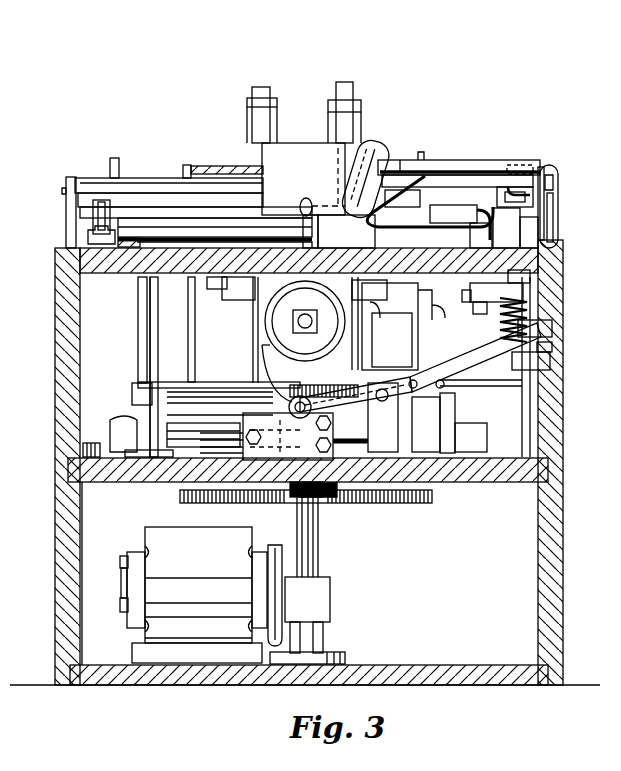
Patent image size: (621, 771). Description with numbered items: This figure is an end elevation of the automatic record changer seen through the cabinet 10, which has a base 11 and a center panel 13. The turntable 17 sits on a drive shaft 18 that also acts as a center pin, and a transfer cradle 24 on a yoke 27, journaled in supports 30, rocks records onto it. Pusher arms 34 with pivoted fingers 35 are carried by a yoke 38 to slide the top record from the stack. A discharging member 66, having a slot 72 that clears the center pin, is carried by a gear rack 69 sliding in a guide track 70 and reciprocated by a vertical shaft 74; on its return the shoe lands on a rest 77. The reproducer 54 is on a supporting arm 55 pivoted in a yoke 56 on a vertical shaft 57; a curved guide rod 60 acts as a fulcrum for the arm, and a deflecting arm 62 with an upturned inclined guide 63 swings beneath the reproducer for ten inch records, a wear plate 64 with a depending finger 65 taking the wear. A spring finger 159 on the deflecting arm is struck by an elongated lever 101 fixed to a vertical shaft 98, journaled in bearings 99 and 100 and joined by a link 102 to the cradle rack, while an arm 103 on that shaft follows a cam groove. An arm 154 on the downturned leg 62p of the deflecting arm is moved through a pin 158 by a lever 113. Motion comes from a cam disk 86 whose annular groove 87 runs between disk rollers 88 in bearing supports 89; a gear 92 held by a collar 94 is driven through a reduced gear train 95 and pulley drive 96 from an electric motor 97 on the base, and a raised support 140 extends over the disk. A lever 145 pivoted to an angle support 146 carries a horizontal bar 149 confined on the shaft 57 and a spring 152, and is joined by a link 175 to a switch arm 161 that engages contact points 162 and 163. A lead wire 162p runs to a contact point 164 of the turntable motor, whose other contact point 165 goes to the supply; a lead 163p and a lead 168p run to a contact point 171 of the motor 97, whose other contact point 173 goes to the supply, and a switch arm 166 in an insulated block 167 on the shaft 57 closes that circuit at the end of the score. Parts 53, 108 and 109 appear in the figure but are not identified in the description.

The cabinet 10 is at (538, 582).
The base 11 is at (450, 665).
The center panel 13 is at (520, 483).
The arm 154 is at (555, 270).
The guide track 70 is at (72, 257).
The switch arm 161 is at (235, 466).
The supports 30 is at (66, 212).
The yoke 27 is at (95, 188).
The transfer cradle 24 is at (204, 180).
The discharging member 66 is at (183, 205).
The elongated lever 101 is at (186, 242).
The turntable 17 is at (232, 230).
The gear rack 69 is at (88, 238).
The drive shaft 18 is at (303, 179).
The vertical shaft 74 is at (300, 150).
The pivoted fingers 35 is at (345, 84).
The pusher arms 34 is at (362, 105).
The slot 72 is at (300, 200).
The rest 77 is at (300, 210).
The depending finger 65 is at (346, 231).
The reproducer 54 is at (382, 150).
The upturned inclined guide 63 is at (452, 168).
The supporting arm 55 is at (480, 168).
The wear plate 64 is at (398, 173).
The deflecting arm 62 is at (515, 170).
The curved guide rod 60 is at (556, 166).
The yoke 56 is at (558, 178).
The vertical shaft 57 is at (553, 204).
The link 102 is at (553, 228).
The spring finger 159 is at (461, 218).
The bearing 100 is at (138, 285).
The vertical shaft 98 is at (150, 350).
The arm 103 is at (150, 380).
The yoke 38 is at (188, 330).
The slide rails 109 is at (240, 372).
The block 108 is at (132, 400).
The bearing 99 is at (118, 438).
The contact point 164 is at (290, 318).
The contact point 162 is at (310, 298).
The contact point 165 is at (308, 340).
The link 175 is at (275, 380).
The housing 53 is at (403, 326).
The lever 113 is at (420, 337).
The lever 145 is at (362, 380).
The pin 158 is at (486, 318).
The spring 152 is at (528, 316).
The horizontal bar 149 is at (474, 360).
The downturned leg 62p is at (511, 332).
The insulated block 167 is at (550, 365).
The switch arm 166 is at (532, 388).
The cam disk 86 is at (442, 408).
The disk rollers 88 is at (455, 427).
The bearing supports 89 is at (470, 440).
The contact point 163 is at (374, 410).
The lead wire 162p is at (340, 445).
The gear 92 is at (218, 503).
The collar 94 is at (290, 510).
The reduced gear train 95 is at (325, 500).
The pulley drive 96 is at (300, 566).
The electric motor 97 is at (170, 528).
The contact point 173 is at (127, 560).
The contact point 171 is at (126, 602).
The lead 163p is at (125, 620).
The lead 168p is at (127, 624).
The angle support 146 is at (400, 493).
The raised support 140 is at (440, 484).
The annular groove 87 is at (463, 483).